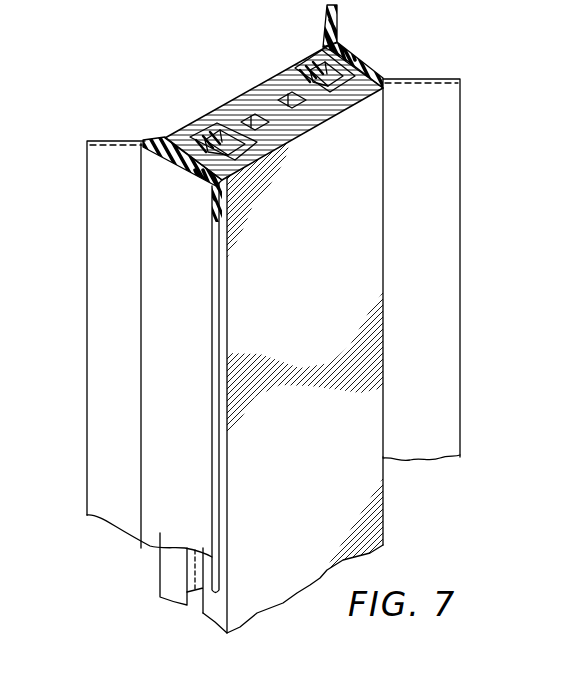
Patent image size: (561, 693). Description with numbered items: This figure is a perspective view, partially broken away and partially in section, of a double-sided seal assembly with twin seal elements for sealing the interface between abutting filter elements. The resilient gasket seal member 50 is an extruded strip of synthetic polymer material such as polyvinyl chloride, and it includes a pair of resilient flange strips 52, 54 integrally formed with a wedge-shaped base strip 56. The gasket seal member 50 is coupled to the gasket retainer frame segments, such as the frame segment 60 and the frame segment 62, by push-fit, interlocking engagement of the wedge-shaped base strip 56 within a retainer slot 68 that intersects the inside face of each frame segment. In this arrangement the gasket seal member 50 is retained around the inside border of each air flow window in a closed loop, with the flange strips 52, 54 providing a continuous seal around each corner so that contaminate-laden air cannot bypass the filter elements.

The resilient gasket seal member 50 is at (98, 233).
The resilient flange strip 52 is at (455, 193).
The resilient flange strip 54 is at (337, 22).
The wedge-shaped base strip 56 is at (203, 125).
The frame segment 60 is at (216, 90).
The frame segment 62 is at (283, 500).
The retainer slot 68 is at (220, 133).